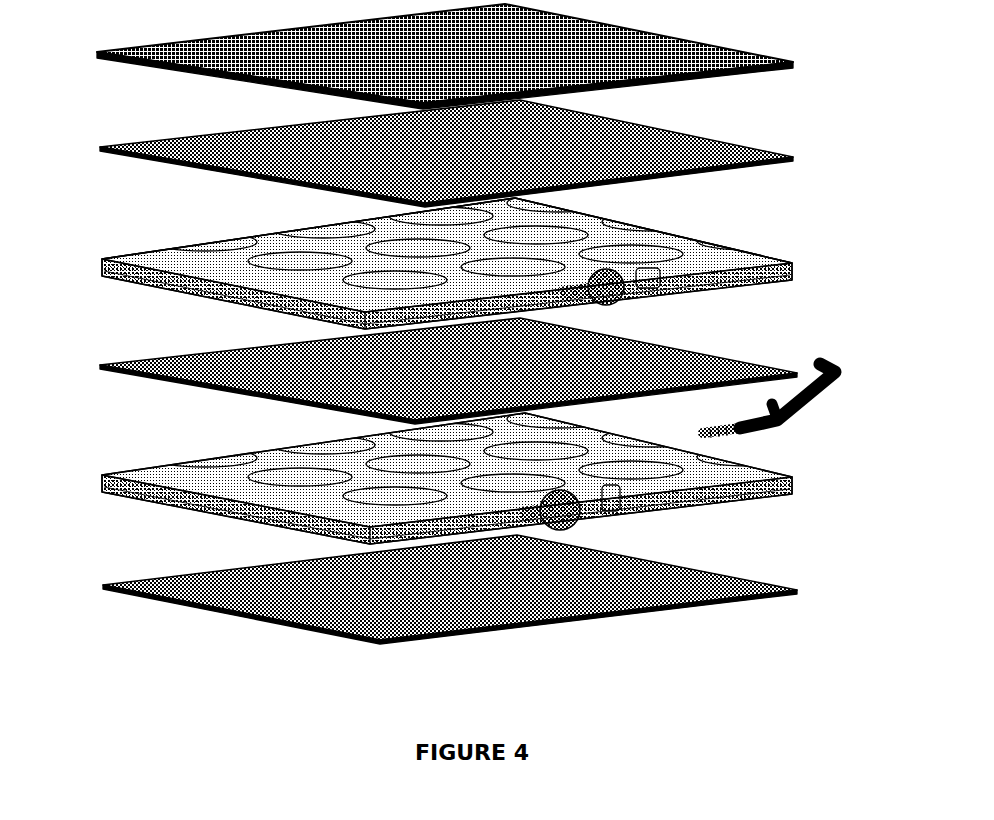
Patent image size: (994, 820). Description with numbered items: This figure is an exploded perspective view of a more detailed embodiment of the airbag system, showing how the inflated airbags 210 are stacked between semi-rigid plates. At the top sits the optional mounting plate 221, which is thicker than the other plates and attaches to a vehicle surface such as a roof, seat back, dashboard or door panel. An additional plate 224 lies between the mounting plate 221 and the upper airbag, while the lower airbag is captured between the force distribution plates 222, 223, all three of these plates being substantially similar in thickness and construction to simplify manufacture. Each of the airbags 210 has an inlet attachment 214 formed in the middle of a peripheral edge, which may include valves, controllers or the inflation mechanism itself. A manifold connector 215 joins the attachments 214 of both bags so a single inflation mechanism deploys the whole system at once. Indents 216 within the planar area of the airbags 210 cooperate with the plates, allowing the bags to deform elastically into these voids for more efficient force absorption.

The airbags 210 is at (797, 256).
The inlet attachment 214 is at (580, 522).
The manifold connector 215 is at (750, 437).
The indents 216 is at (660, 219).
The mounting plate 221 is at (795, 63).
The force distribution plate 222 is at (187, 393).
The force distribution plate 223 is at (103, 585).
The additional plate 224 is at (100, 147).